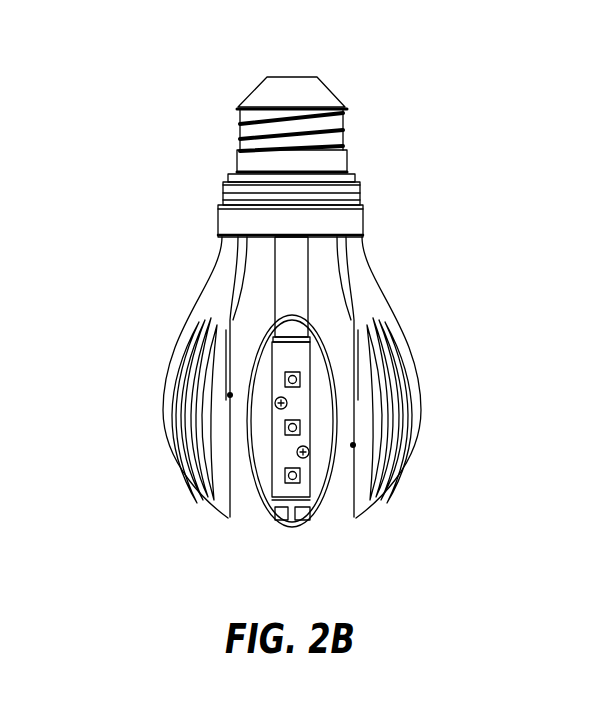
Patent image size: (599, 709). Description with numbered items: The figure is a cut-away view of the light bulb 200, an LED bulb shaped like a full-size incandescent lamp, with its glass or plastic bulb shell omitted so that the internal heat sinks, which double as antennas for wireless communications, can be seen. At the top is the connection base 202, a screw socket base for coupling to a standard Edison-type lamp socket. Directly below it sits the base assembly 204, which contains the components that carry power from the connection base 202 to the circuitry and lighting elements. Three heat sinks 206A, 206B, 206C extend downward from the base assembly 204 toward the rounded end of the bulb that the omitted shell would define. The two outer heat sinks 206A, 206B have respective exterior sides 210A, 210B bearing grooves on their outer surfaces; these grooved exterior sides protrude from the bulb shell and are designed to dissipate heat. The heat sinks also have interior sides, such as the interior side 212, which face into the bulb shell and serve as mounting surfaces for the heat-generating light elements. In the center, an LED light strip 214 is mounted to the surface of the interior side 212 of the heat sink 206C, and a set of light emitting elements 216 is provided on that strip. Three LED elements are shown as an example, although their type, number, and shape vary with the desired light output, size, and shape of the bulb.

The light bulb 200 is at (163, 53).
The connection base 202 is at (343, 138).
The base assembly 204 is at (352, 217).
The heat sink 206A is at (192, 448).
The heat sink 206B is at (408, 427).
The heat sink 206C is at (292, 528).
The exterior side 210A is at (162, 392).
The exterior side 210B is at (420, 385).
The interior side 212 is at (317, 385).
The LED light strip 214 is at (277, 472).
The light emitting elements 216 is at (302, 482).